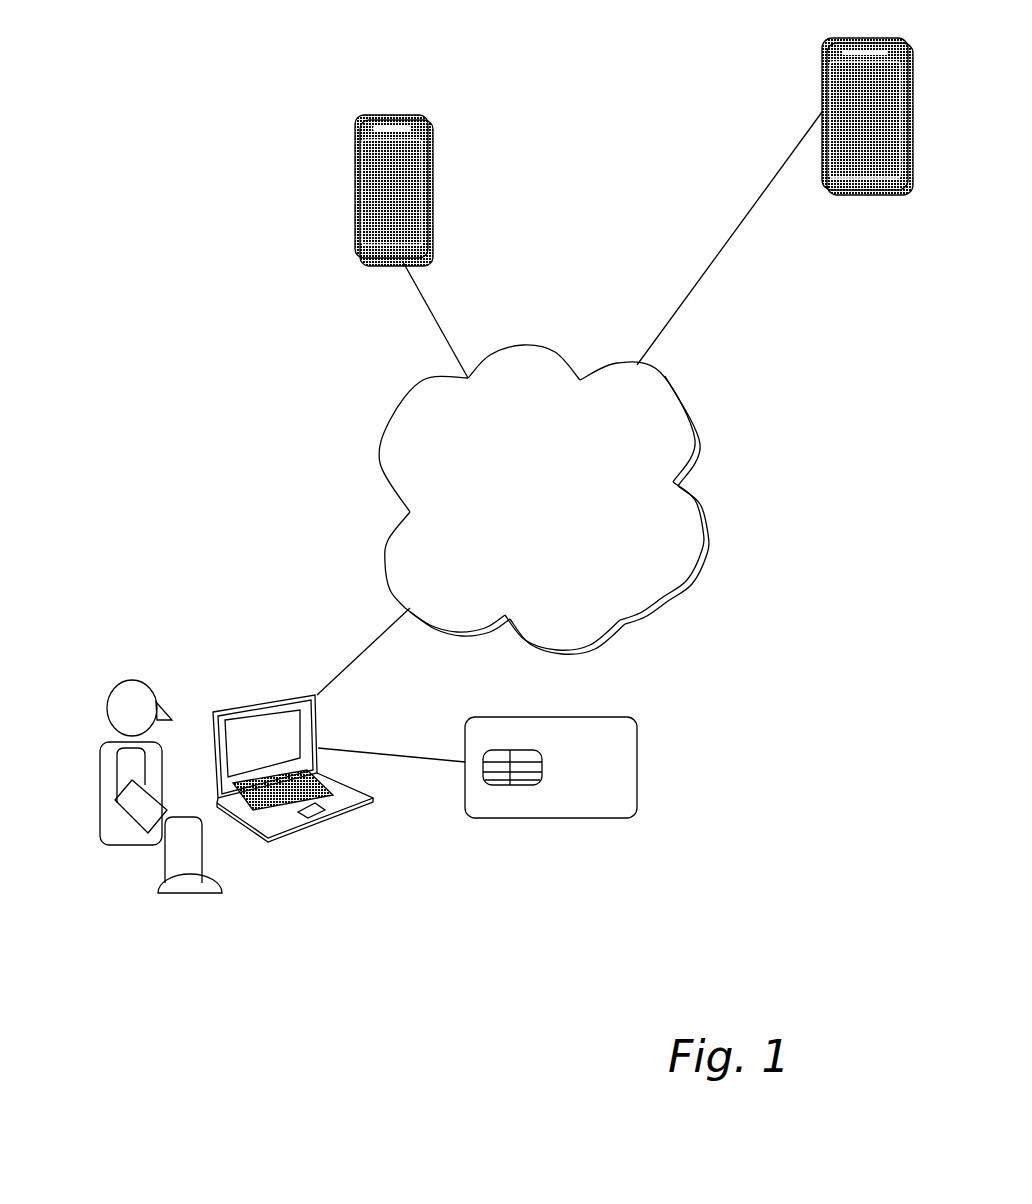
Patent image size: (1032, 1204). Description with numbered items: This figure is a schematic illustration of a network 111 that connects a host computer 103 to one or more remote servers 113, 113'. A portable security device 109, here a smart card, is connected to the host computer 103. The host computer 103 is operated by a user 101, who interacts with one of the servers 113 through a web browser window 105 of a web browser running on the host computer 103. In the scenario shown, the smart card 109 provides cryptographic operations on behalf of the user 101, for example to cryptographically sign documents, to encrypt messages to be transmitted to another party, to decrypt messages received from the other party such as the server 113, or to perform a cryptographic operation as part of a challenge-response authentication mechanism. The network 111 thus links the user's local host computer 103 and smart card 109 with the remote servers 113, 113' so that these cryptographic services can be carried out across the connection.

The user 101 is at (100, 787).
The host computer 103 is at (310, 817).
The web browser window 105 is at (300, 753).
The portable security device 109 is at (637, 807).
The network 111 is at (382, 446).
The remote server 113 is at (431, 190).
The remote server 113' is at (881, 140).